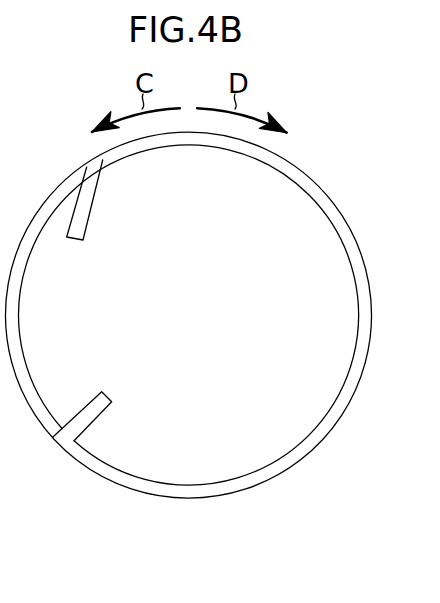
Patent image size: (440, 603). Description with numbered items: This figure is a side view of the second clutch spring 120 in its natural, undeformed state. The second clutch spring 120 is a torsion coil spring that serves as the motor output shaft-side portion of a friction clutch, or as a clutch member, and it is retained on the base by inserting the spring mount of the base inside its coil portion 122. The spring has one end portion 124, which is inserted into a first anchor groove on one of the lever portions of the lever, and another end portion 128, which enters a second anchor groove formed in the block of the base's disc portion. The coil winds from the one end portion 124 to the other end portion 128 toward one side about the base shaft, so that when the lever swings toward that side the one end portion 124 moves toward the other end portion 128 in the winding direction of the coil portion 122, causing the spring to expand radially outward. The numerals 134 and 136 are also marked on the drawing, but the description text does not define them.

The second clutch spring 120 is at (215, 297).
The coil portion 122 is at (367, 278).
The one end portion 124 is at (93, 400).
The other end portion 128 is at (94, 197).
The outer surface 134 is at (193, 498).
The inner surface 136 is at (307, 158).